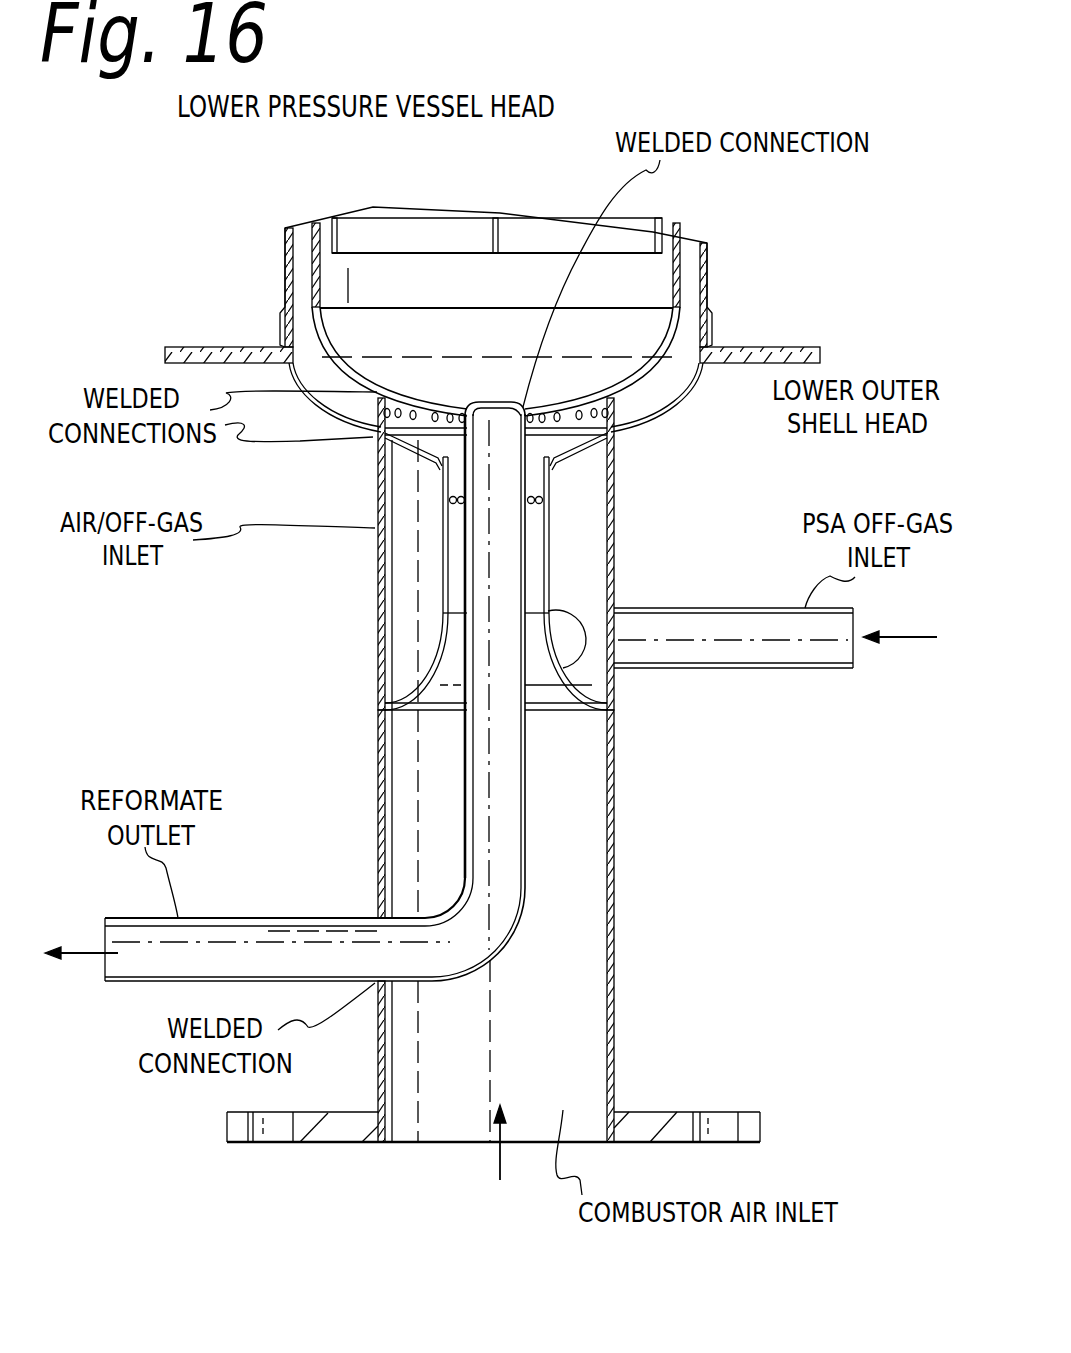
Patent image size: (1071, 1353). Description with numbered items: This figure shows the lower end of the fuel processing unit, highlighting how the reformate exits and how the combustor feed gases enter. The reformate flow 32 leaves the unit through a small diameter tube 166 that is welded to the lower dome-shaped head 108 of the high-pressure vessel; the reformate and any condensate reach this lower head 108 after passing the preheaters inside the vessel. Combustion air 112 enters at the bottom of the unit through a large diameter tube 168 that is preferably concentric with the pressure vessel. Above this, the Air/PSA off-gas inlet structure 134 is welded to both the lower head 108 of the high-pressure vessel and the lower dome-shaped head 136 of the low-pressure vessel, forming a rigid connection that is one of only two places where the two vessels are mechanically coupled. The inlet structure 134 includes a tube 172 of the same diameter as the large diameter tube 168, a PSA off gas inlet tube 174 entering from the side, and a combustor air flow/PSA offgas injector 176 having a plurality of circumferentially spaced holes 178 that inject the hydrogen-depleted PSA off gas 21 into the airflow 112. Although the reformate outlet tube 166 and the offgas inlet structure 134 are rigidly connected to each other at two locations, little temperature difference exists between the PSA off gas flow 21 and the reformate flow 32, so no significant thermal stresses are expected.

The lower dome-shaped head 108 is at (416, 357).
The lower dome-shaped head for the low-pressure vessel 136 is at (676, 372).
The Air/PSA off-gas inlet structure 134 is at (368, 638).
The large diameter tube 168 is at (628, 942).
The combustor air flow/PSA offgas injector 176 is at (440, 557).
The circumferentially spaced holes 178 is at (450, 499).
The tube 172 is at (613, 552).
The PSA off gas inlet tube 174 is at (715, 670).
The hydrogen-depleted off gas 21 is at (913, 642).
The small diameter tube 166 is at (318, 918).
The reformate stream 32 is at (74, 948).
The combustion air 112 is at (500, 1163).